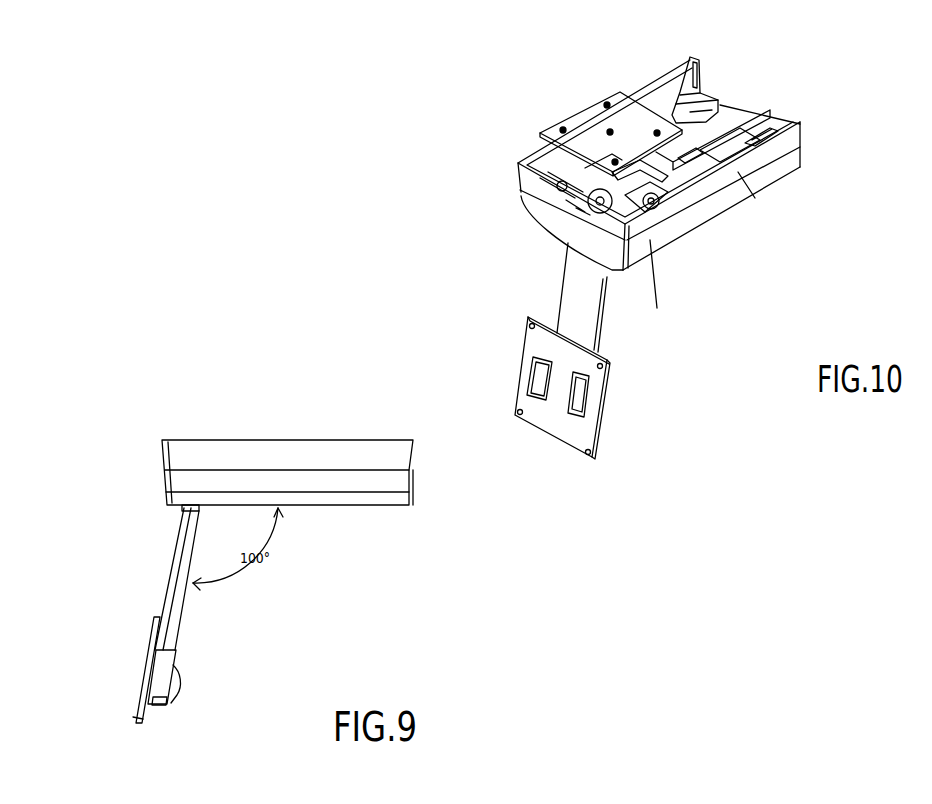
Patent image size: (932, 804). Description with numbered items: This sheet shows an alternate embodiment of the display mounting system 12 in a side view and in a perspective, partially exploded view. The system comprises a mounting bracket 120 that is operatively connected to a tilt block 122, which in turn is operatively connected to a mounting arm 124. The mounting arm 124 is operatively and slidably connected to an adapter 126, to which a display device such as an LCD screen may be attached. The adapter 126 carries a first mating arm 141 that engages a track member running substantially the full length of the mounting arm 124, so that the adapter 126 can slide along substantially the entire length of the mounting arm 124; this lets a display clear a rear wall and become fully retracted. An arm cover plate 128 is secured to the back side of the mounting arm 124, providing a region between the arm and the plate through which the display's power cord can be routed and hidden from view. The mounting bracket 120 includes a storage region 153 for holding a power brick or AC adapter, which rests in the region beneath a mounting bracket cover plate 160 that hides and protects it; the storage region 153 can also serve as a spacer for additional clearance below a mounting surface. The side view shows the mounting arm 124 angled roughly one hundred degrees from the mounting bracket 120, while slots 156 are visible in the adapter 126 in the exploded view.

In FIG. 10, the display mounting assembly 12 is at (447, 140).
In FIG. 9, the display mounting assembly 12 is at (100, 423).
In FIG. 10, the mounting bracket 120 is at (524, 201).
In FIG. 9, the mounting bracket 120 is at (396, 484).
In FIG. 9, the tilt block 122 is at (193, 508).
In FIG. 10, the mounting arm 124 is at (567, 296).
In FIG. 9, the mounting arm 124 is at (178, 548).
In FIG. 10, the adapter 126 is at (572, 438).
In FIG. 9, the adapter 126 is at (148, 683).
In FIG. 9, the arm cover plate 128 is at (185, 612).
In FIG. 9, the first mating arm 141 is at (173, 710).
In FIG. 10, the storage region 153 is at (672, 180).
In FIG. 10, the slots 156 is at (545, 383).
In FIG. 10, the mounting bracket cover plate 160 is at (588, 118).